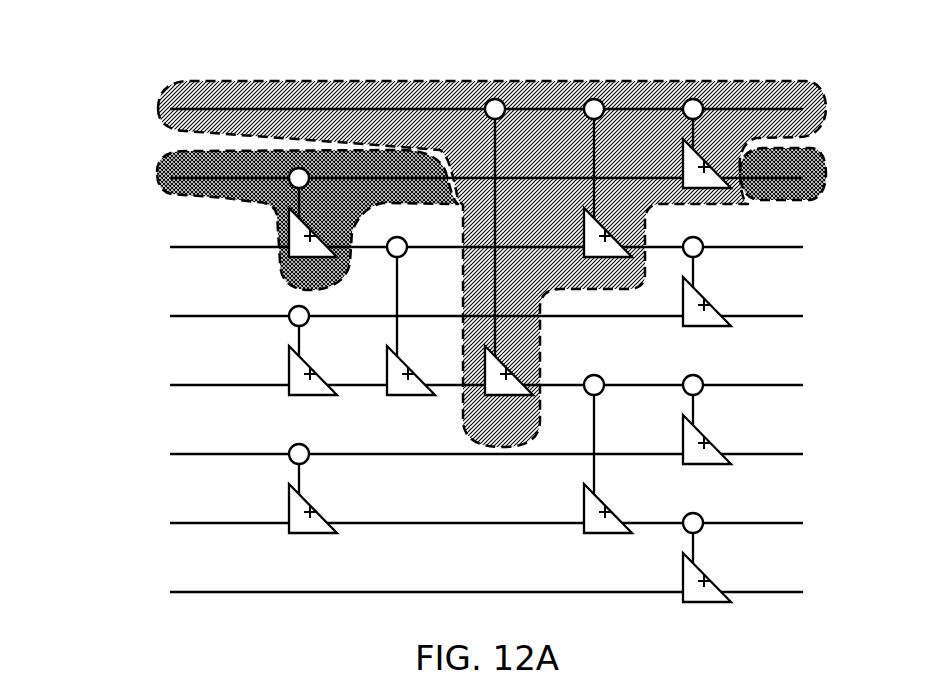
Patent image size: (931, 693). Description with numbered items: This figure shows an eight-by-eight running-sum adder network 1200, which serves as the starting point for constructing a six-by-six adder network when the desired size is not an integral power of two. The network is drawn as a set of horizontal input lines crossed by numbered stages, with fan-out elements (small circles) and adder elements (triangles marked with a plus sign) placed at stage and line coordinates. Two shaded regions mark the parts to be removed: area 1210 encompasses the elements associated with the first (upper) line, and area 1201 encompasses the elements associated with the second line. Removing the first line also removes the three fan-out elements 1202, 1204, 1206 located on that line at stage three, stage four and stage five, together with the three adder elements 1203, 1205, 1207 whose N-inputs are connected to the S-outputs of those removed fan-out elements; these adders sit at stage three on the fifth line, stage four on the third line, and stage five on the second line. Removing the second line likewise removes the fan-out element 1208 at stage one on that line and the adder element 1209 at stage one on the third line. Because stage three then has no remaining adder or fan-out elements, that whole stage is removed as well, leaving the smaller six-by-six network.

The 8×8 adder network 1200 is at (68, 36).
The area encompassing the second line 1201 is at (290, 280).
The fan-out element 1202 is at (488, 97).
The adder element 1203 is at (503, 397).
The fan-out element 1204 is at (592, 97).
The adder element 1205 is at (597, 258).
The fan-out element 1206 is at (692, 84).
The adder element 1207 is at (717, 192).
The fan-out element 1208 is at (282, 183).
The adder element 1209 is at (286, 229).
The area encompassing the first line 1210 is at (730, 82).